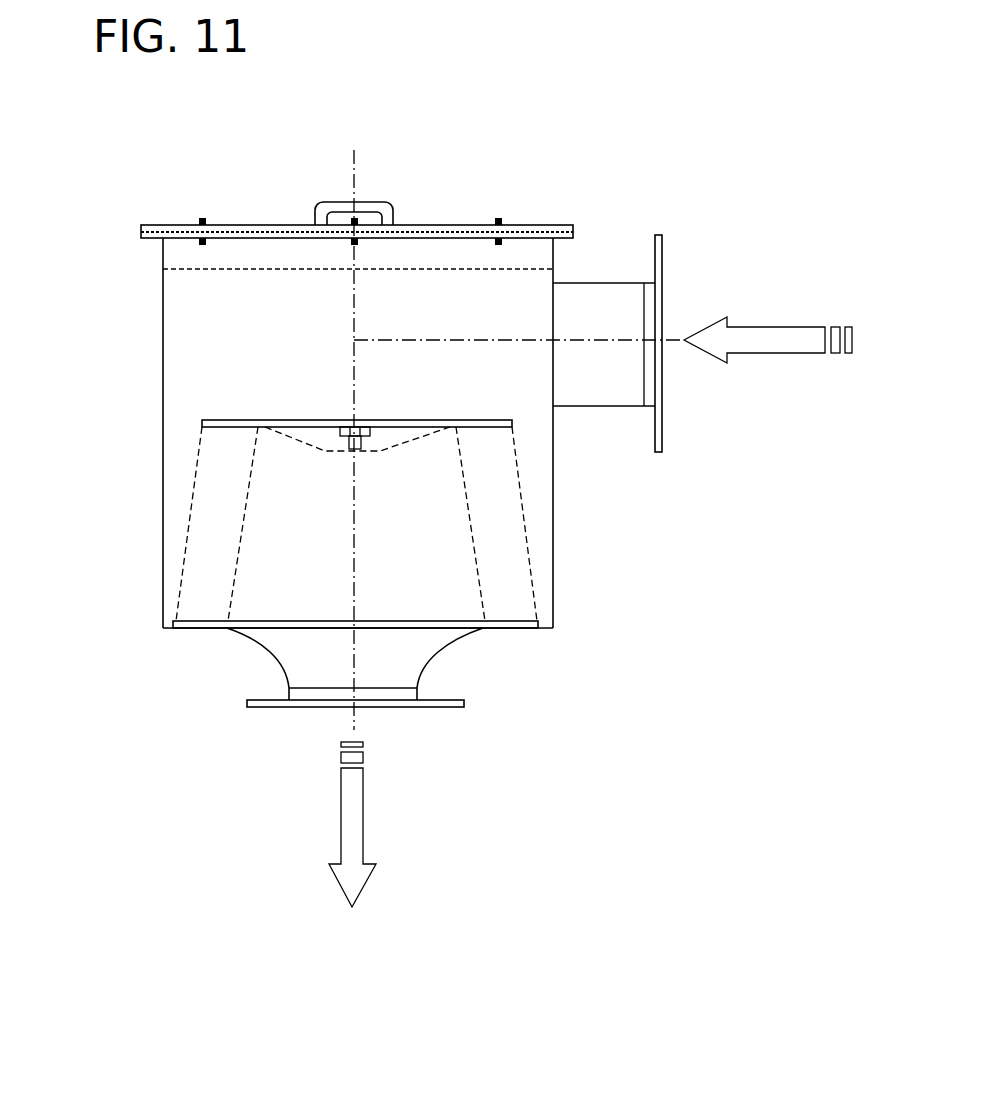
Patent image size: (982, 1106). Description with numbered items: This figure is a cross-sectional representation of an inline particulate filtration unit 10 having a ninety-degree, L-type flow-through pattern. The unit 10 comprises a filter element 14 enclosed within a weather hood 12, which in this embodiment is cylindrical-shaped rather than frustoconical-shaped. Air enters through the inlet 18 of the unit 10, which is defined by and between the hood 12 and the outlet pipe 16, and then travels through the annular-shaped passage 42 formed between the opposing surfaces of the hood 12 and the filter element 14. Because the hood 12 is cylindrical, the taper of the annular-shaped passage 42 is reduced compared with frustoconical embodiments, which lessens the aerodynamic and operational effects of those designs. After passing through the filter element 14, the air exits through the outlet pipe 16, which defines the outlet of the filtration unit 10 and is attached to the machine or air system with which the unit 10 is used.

The filtration unit 10 is at (540, 147).
The weather hood 12 is at (553, 535).
The filter element 14 is at (210, 567).
The outlet pipe 16 is at (396, 667).
The inlet 18 is at (233, 335).
The annular-shaped flow passage 42 is at (183, 453).